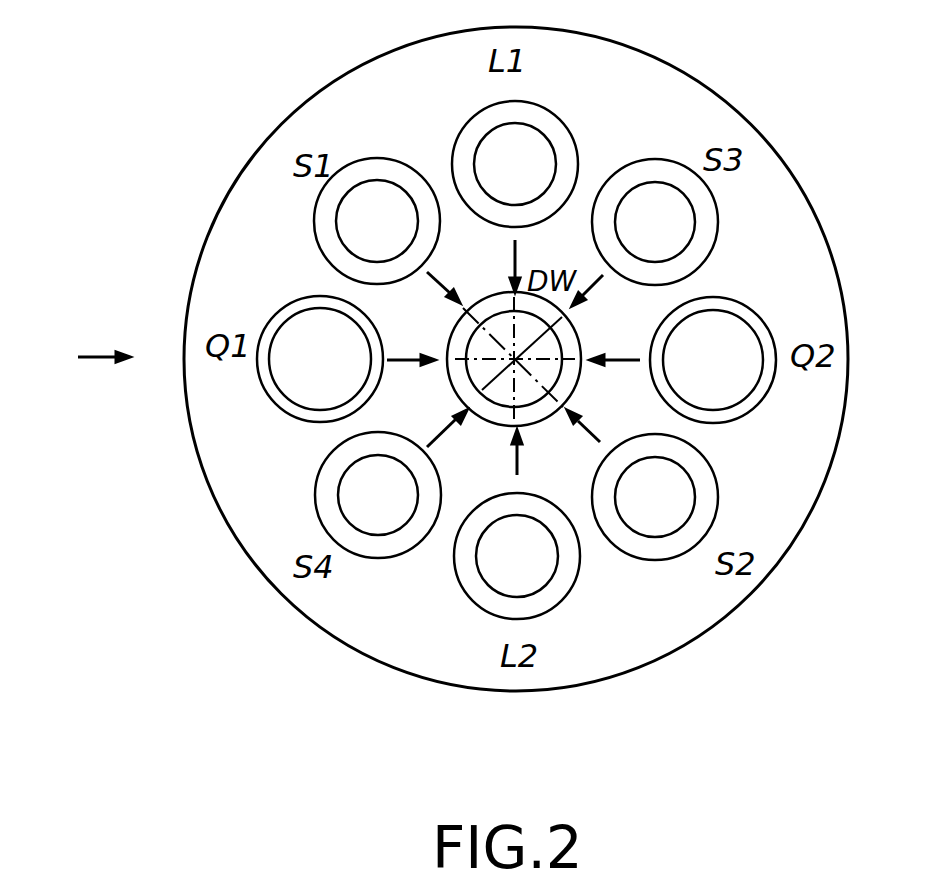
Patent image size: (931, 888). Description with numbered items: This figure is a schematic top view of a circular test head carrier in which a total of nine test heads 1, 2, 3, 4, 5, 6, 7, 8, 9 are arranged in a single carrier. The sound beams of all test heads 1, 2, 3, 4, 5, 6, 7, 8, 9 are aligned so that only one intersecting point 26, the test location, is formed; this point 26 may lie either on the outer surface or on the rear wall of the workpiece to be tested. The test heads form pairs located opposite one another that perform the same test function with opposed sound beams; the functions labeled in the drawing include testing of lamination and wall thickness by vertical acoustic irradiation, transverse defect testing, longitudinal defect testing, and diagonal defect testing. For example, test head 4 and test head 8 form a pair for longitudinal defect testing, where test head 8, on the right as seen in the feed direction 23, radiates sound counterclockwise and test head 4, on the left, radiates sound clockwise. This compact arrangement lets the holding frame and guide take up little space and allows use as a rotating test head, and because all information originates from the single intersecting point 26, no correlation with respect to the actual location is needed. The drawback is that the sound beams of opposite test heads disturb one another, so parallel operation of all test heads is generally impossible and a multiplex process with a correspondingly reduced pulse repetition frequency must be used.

The test head 1 is at (550, 348).
The test head 2 is at (300, 342).
The test head 3 is at (370, 197).
The test head 4 is at (528, 152).
The test head 5 is at (677, 232).
The test head 6 is at (740, 342).
The test head 7 is at (670, 480).
The test head 8 is at (540, 577).
The test head 9 is at (348, 502).
The feed direction 23 is at (78, 357).
The intersecting point 26 is at (513, 360).